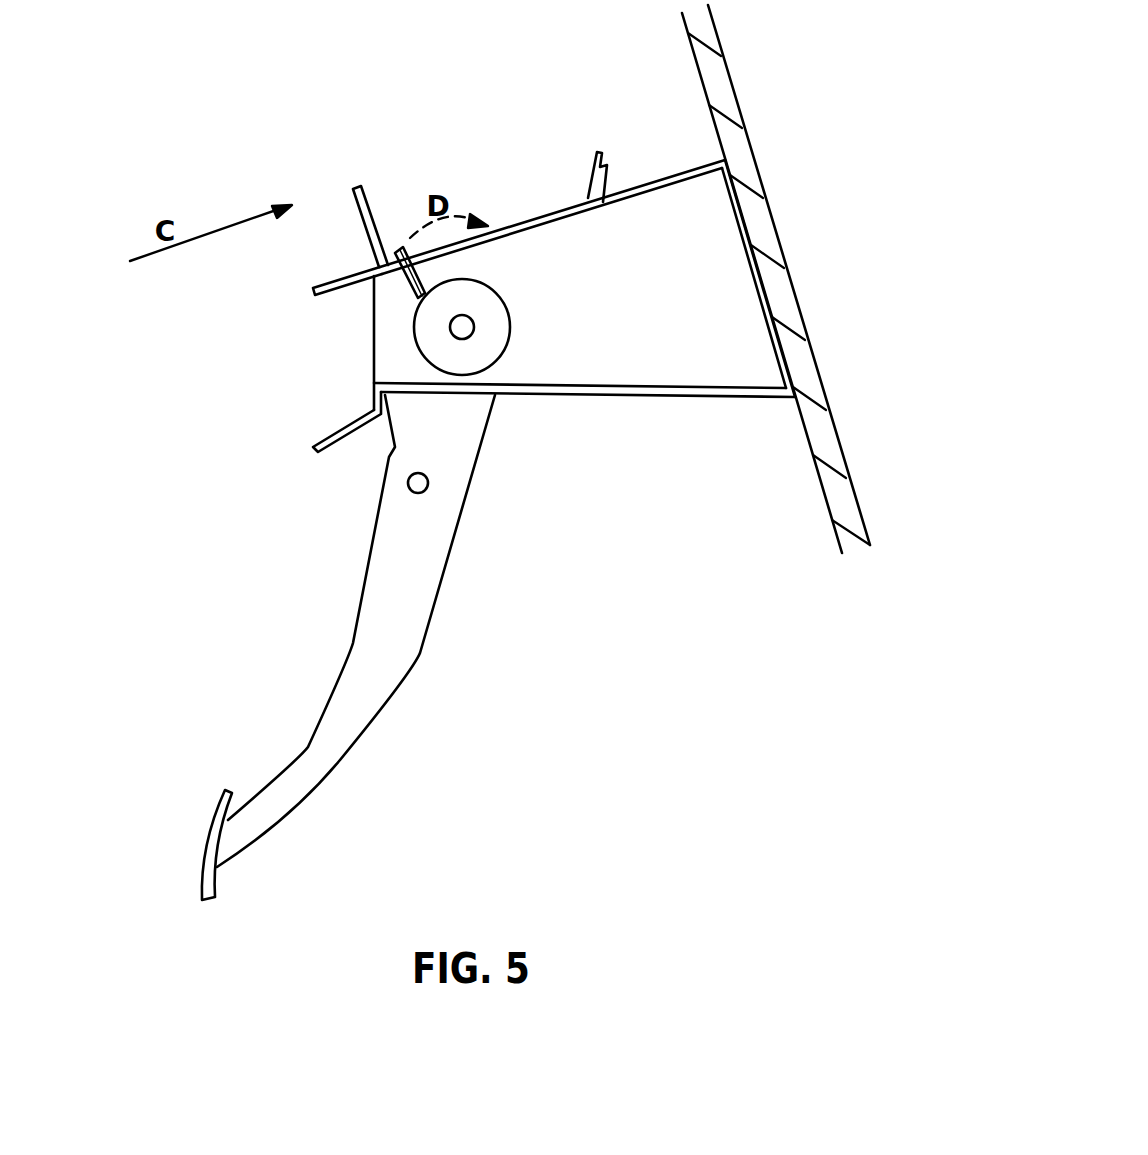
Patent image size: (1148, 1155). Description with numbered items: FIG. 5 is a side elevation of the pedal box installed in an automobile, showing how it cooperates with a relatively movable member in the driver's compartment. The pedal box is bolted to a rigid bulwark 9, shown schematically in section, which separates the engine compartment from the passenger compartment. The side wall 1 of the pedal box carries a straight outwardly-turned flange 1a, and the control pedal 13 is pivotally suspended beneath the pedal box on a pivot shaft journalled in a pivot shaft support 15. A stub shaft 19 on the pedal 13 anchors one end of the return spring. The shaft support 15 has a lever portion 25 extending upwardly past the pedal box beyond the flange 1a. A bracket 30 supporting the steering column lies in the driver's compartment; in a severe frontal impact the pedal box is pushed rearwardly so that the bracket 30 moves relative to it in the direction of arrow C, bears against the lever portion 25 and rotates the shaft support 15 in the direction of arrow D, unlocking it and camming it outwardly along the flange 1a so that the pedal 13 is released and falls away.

The side wall 1 is at (735, 313).
The outwardly-turned flange 1a is at (528, 212).
The bulwark 9 is at (720, 98).
The control pedal 13 is at (390, 653).
The pivot shaft support 15 is at (433, 345).
The stub shaft 19 is at (415, 487).
The lever portion 25 is at (383, 272).
The bracket 30 is at (361, 186).